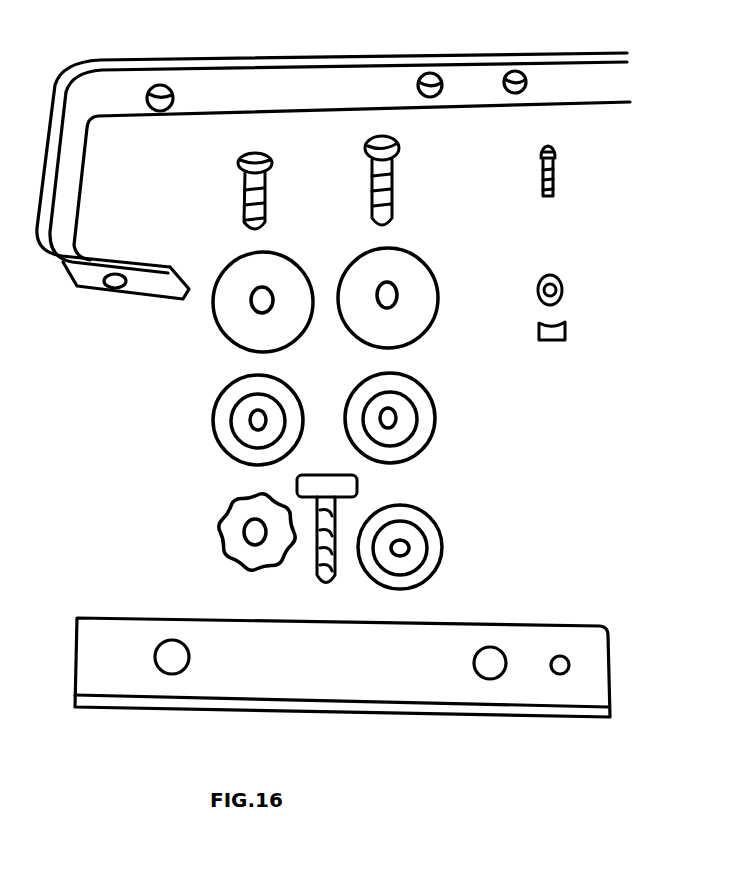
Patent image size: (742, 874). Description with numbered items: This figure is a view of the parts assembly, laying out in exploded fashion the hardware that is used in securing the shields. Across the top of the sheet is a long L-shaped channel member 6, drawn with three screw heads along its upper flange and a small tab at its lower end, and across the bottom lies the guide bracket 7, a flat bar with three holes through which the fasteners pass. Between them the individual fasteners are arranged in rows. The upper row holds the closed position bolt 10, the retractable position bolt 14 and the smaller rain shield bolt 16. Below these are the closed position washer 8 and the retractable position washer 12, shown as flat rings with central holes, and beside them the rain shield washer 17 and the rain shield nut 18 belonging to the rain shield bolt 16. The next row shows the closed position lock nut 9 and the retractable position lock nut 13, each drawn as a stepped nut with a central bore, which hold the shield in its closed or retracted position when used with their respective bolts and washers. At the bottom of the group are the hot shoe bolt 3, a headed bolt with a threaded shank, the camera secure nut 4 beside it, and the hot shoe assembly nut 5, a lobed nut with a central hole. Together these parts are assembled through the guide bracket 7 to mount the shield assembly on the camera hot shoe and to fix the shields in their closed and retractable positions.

The hot shoe bolt 3 is at (350, 487).
The camera secure nut 4 is at (413, 553).
The hot shoe assembly nut 5 is at (237, 535).
The bracket 6 is at (613, 80).
The guide bracket 7 is at (583, 668).
The closed position washer 8 is at (236, 309).
The closed position lock nut 9 is at (231, 425).
The closed position bolt 10 is at (266, 200).
The retractable position washer 12 is at (415, 312).
The retractable position lock nut 13 is at (400, 418).
The retractable position bolt 14 is at (393, 183).
The rain shield bolt 16 is at (555, 172).
The rain shield washer 17 is at (563, 287).
The rain shield nut 18 is at (566, 334).